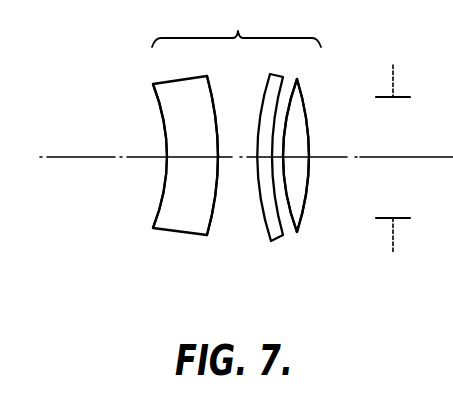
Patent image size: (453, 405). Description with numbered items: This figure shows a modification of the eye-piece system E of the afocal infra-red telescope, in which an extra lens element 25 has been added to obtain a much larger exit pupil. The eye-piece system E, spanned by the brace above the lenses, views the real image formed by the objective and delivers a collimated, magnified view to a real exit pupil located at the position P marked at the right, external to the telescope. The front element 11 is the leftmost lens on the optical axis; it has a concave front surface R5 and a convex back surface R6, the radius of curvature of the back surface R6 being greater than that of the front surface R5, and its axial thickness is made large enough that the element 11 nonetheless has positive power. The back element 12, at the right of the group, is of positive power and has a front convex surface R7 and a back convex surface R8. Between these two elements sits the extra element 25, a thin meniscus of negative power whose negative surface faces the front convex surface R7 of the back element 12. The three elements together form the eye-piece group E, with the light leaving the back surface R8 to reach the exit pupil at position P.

The front element 11 is at (183, 221).
The extra negative power lens element 25 is at (272, 229).
The back element 12 is at (301, 190).
The concave front surface R5 is at (157, 108).
The convex back surface R6 is at (212, 92).
The front convex surface R7 is at (294, 234).
The back convex surface R8 is at (308, 137).
The eye-piece system E is at (236, 27).
The exit pupil position P is at (399, 158).